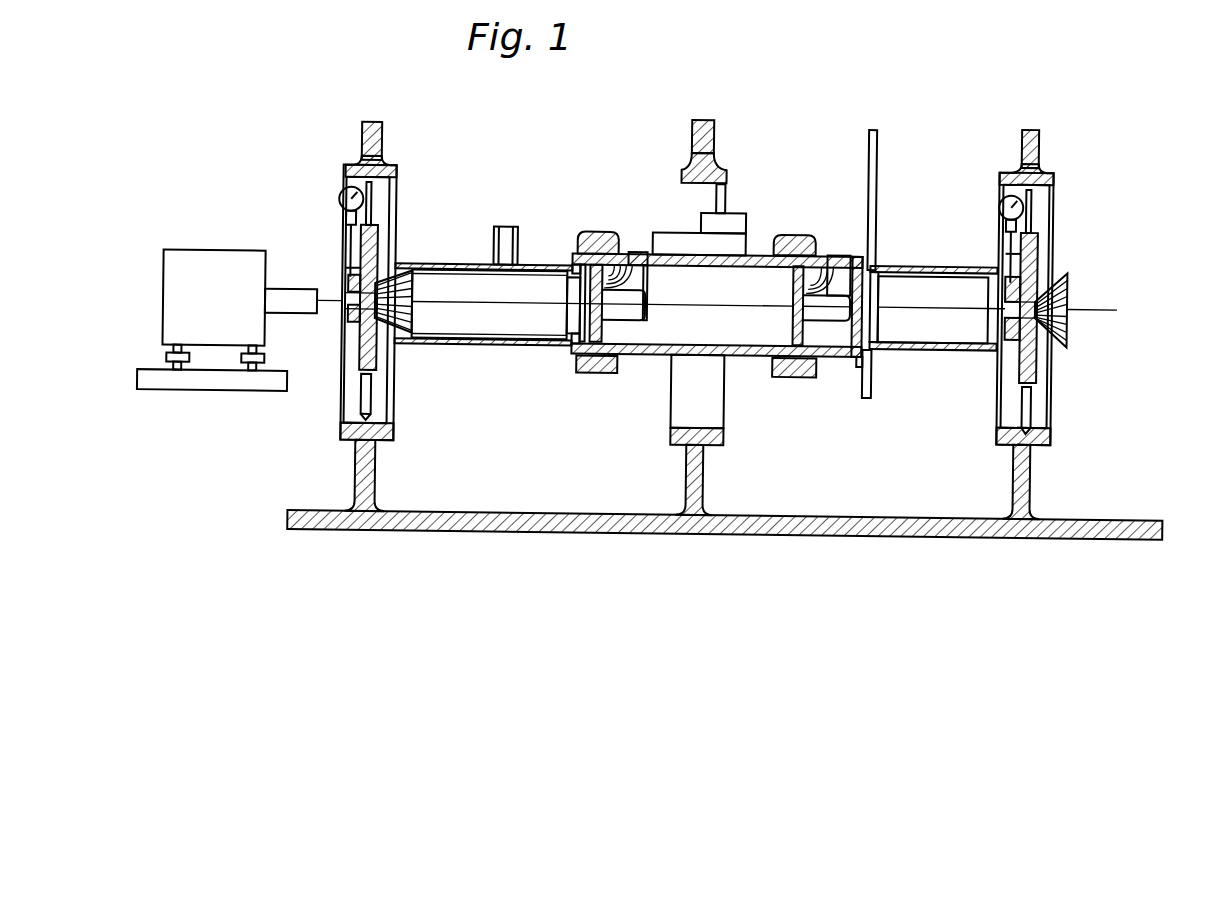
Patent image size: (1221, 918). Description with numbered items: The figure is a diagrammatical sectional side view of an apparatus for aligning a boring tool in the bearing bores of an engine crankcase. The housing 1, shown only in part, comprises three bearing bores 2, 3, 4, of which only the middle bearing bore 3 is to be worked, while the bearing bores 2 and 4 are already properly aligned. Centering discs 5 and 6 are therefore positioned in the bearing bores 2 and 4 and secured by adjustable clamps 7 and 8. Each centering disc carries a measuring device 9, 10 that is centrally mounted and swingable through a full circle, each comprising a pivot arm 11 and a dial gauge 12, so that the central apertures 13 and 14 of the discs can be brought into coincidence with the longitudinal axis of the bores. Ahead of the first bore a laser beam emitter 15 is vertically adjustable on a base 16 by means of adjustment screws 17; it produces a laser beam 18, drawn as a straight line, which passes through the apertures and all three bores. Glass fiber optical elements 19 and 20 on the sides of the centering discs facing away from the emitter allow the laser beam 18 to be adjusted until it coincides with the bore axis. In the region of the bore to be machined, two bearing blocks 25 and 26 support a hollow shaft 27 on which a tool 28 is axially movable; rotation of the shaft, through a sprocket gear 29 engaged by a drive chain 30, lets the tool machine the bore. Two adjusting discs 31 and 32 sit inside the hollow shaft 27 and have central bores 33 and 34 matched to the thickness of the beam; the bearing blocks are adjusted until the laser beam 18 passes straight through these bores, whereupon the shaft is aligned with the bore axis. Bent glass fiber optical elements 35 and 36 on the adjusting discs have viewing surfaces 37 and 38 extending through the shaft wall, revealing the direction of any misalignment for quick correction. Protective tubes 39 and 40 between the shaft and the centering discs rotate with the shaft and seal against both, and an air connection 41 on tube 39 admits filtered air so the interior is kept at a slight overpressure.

The housing 1 is at (598, 516).
The bearing bore 2 is at (407, 176).
The bearing bore 3 is at (724, 163).
The bearing bore 4 is at (1065, 171).
The centering disc 5 is at (378, 246).
The centering disc 6 is at (1040, 231).
The clamp 7 is at (398, 211).
The clamp 8 is at (1040, 209).
The measuring device 9 is at (337, 236).
The measuring device 10 is at (1000, 230).
The pivot arm 11 is at (350, 272).
The dial gauge 12 is at (340, 199).
The central aperture 13 is at (360, 331).
The central aperture 14 is at (1035, 343).
The laser beam emitter 15 is at (190, 291).
The base 16 is at (162, 387).
The adjustment screws 17 is at (168, 366).
The laser beam 18 is at (503, 342).
The glass fiber optical element 19 is at (410, 342).
The glass fiber optical element 20 is at (1067, 321).
The bearing block 25 is at (598, 375).
The bearing block 26 is at (800, 377).
The hollow shaft 27 is at (740, 357).
The tool 28 is at (722, 227).
The sprocket gear 29 is at (873, 377).
The drive chain 30 is at (875, 153).
The adjusting disc 31 is at (603, 330).
The adjusting disc 32 is at (780, 312).
The bore 33 is at (578, 352).
The bore 34 is at (817, 367).
The bent glass fiber optical element 35 is at (630, 265).
The bent glass fiber optical element 36 is at (830, 280).
The viewing surface 37 is at (640, 265).
The viewing surface 38 is at (843, 254).
The protective tube 39 is at (532, 267).
The protective tube 40 is at (908, 264).
The air connection 41 is at (496, 234).